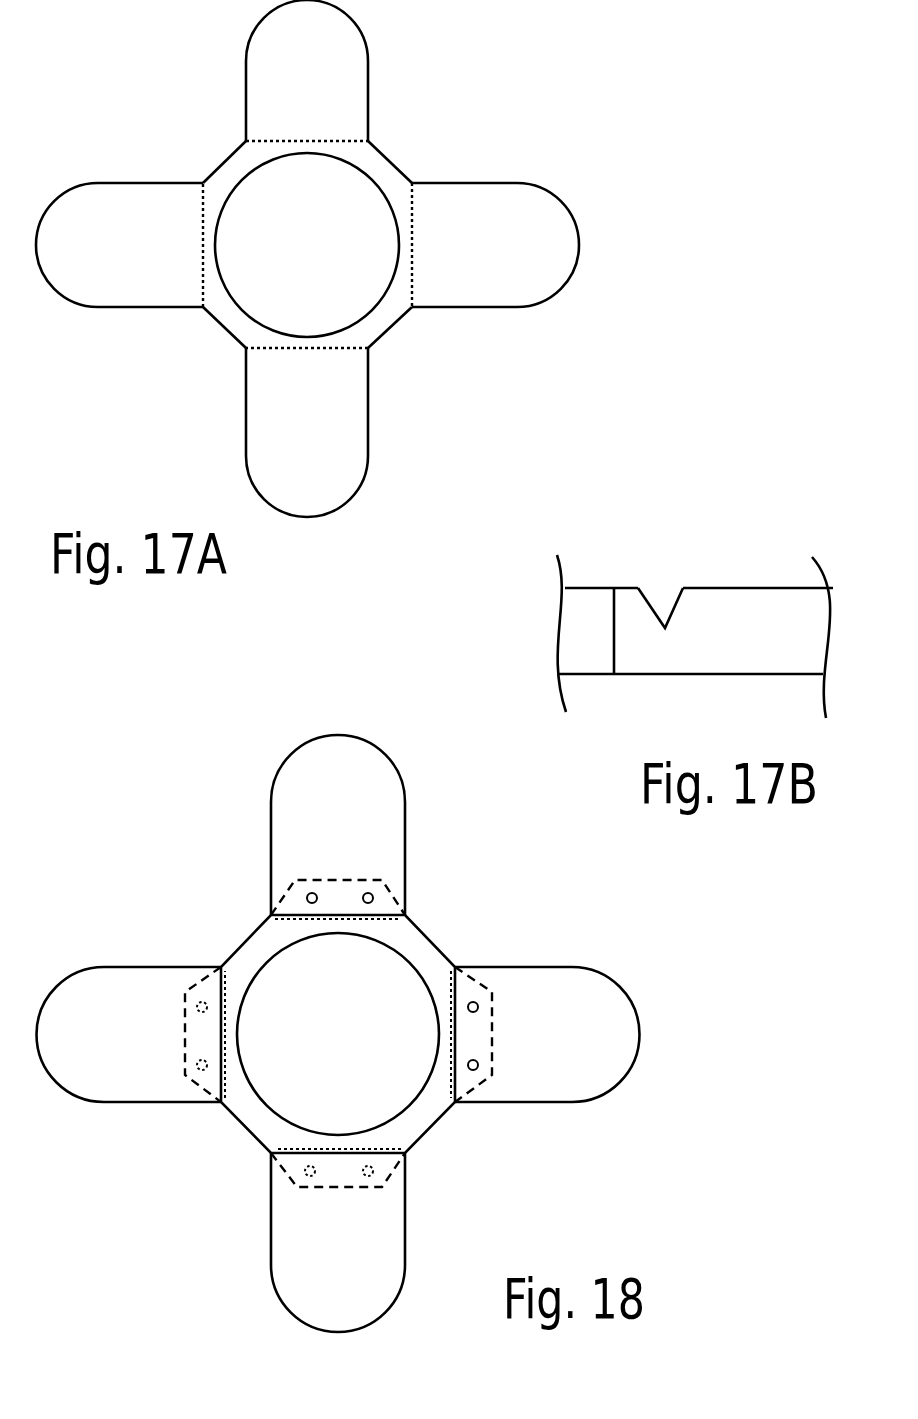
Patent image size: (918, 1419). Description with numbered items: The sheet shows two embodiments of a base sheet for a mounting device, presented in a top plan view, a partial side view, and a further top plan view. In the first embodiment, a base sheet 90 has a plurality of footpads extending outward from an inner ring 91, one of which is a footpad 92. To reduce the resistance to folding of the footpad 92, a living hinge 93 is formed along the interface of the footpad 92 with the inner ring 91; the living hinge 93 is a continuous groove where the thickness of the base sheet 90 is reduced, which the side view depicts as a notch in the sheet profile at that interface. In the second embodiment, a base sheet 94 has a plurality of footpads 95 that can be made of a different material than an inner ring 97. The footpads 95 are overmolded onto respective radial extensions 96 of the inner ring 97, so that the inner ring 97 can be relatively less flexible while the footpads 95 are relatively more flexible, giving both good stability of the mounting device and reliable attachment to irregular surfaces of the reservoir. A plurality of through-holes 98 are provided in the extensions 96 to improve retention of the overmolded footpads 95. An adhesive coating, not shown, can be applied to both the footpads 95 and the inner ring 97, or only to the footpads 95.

In FIG. 17A, the base sheet 90 is at (307, 258).
In FIG. 17A, the inner ring 91 is at (380, 167).
In FIG. 17B, the inner ring 91 is at (592, 603).
In FIG. 17A, the footpad 92 is at (527, 233).
In FIG. 17B, the footpad 92 is at (738, 600).
In FIG. 17A, the living hinge 93 is at (412, 288).
In FIG. 17B, the living hinge 93 is at (650, 598).
In FIG. 18, the base sheet 94 is at (360, 1040).
In FIG. 18, the footpads 95 is at (288, 815).
In FIG. 18, the radial extensions 96 is at (355, 882).
In FIG. 18, the inner ring 97 is at (428, 937).
In FIG. 18, the through-holes 98 is at (364, 905).